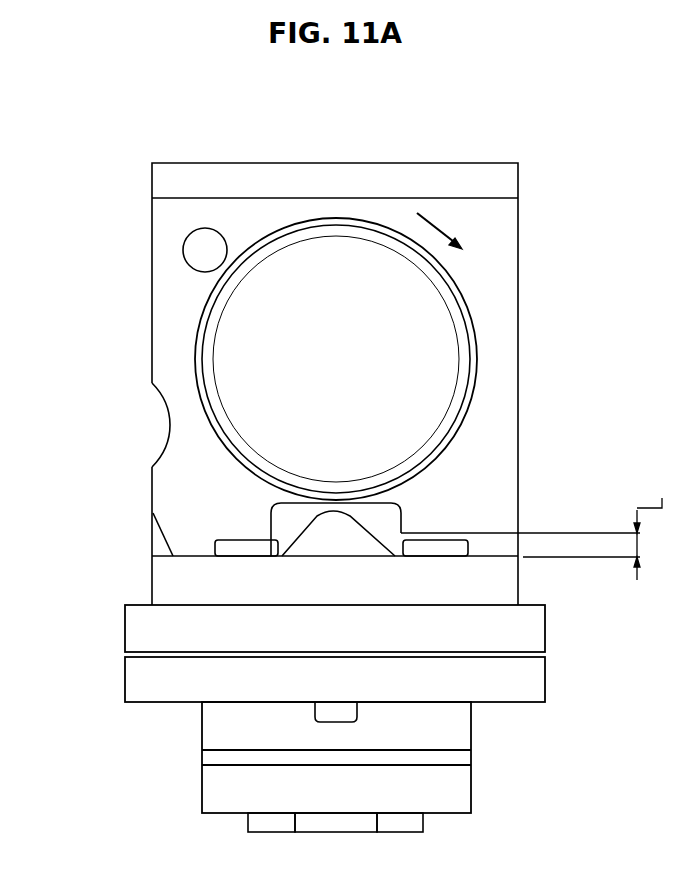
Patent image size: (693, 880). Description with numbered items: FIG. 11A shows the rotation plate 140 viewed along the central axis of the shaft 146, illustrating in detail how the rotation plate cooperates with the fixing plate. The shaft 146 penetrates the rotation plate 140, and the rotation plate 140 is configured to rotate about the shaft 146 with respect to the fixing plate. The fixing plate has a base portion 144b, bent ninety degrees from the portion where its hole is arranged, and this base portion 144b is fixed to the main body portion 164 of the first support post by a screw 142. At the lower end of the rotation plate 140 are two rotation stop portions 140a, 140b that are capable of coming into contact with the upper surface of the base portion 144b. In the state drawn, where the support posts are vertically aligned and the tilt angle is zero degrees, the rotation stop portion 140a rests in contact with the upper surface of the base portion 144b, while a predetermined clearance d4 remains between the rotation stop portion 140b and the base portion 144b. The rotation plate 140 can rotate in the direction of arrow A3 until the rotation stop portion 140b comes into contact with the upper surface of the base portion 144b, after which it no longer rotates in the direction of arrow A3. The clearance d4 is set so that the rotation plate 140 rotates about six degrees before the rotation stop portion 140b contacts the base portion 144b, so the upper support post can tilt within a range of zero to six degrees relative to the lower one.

The rotation plate 140 is at (500, 240).
The rotation stop portion 140a is at (193, 557).
The rotation stop portion 140b is at (436, 539).
The screw 142 is at (233, 545).
The base portion 144b is at (498, 578).
The shaft 146 is at (430, 366).
The main body portion 164 is at (530, 626).
The arrow A3 is at (443, 223).
The clearance d4 is at (648, 532).